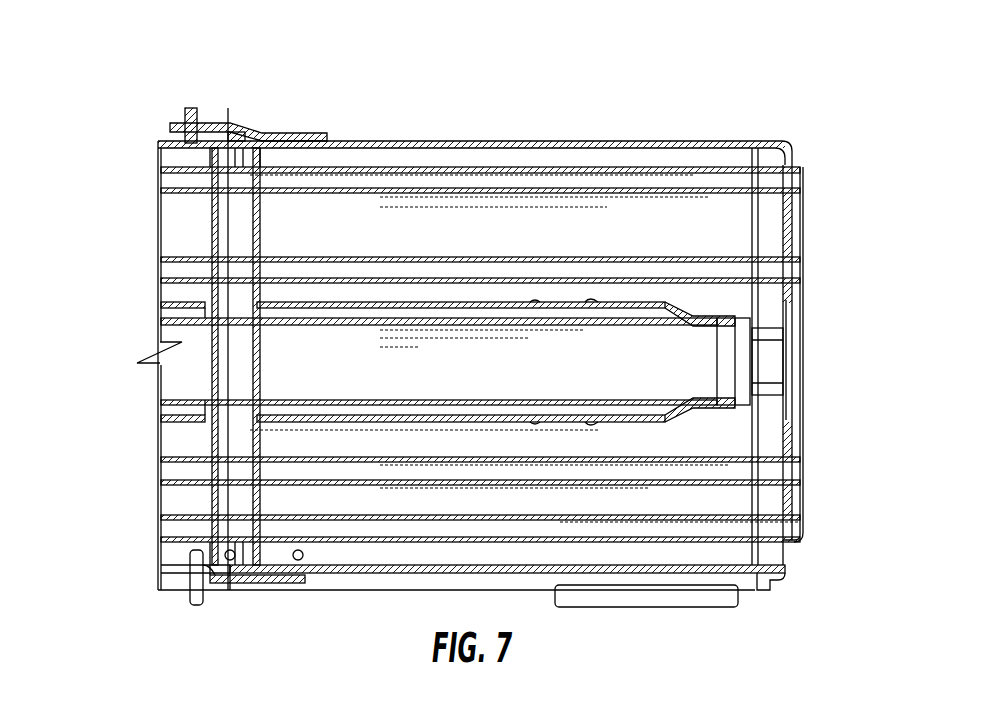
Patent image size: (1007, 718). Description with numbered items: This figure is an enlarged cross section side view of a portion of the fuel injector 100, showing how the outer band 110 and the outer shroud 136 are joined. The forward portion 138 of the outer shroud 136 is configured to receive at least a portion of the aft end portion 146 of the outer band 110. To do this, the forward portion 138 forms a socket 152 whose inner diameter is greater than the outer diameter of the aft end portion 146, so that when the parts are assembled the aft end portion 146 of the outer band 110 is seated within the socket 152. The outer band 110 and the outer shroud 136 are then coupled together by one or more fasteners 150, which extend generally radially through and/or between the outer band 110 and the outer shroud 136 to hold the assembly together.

The fuel injector 100 is at (712, 60).
The outer band 110 is at (158, 142).
The outer shroud 136 is at (525, 141).
The forward portion 138 is at (243, 118).
The aft end portion 146 is at (172, 150).
The fasteners 150 is at (191, 107).
The socket 152 is at (232, 358).